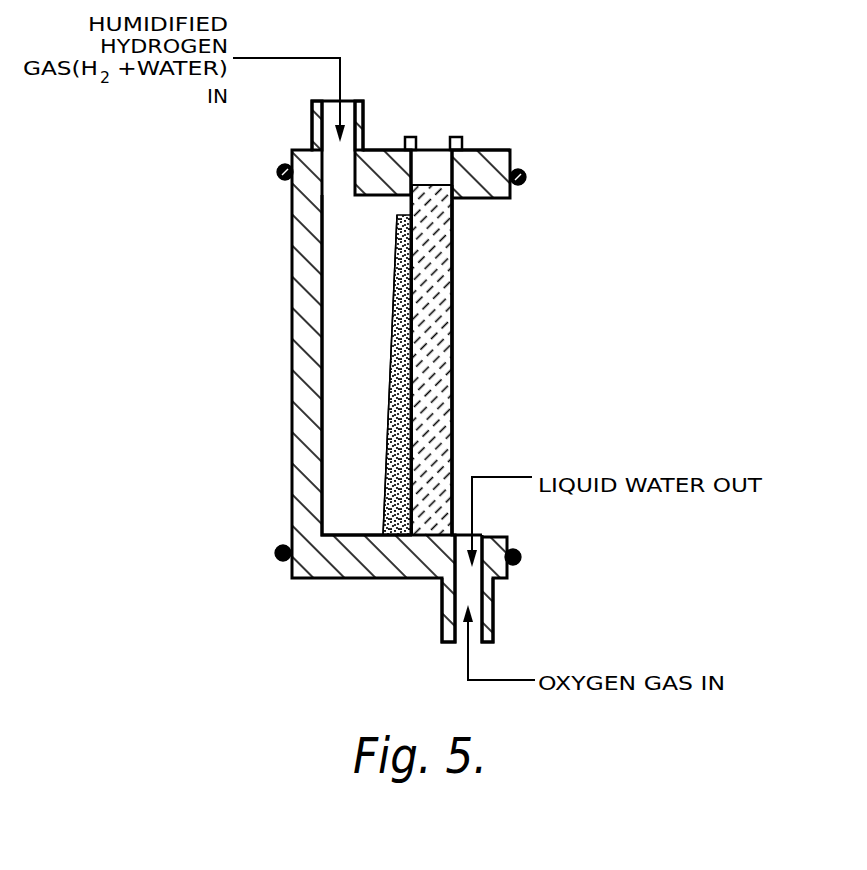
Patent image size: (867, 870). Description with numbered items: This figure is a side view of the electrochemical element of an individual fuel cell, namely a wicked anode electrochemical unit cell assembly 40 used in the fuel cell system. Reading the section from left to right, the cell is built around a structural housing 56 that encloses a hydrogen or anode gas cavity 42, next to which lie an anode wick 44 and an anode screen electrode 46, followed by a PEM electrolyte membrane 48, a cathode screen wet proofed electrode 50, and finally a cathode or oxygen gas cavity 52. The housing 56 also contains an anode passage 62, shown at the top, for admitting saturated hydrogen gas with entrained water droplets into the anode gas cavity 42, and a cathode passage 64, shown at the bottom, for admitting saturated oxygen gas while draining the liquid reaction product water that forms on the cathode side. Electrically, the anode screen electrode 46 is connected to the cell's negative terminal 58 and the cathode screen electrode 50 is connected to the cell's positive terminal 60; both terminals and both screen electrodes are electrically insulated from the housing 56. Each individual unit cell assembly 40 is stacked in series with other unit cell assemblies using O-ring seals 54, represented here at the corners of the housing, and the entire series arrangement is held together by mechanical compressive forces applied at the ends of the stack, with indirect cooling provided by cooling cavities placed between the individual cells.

The wicked anode electrochemical unit cell assembly 40 is at (409, 342).
The hydrogen or anode gas cavity 42 is at (370, 296).
The anode wick 44 is at (399, 414).
The anode screen electrode 46 is at (371, 369).
The PEM electrolyte membrane 48 is at (430, 433).
The cathode screen wet proofed electrode 50 is at (473, 360).
The cathode or oxygen gas cavity 52 is at (507, 364).
The O-ring seals 54 is at (278, 172).
The structural housing 56 is at (292, 362).
The negative terminal 58 is at (404, 140).
The positive terminal 60 is at (464, 143).
The anode passage 62 is at (352, 106).
The cathode passage 64 is at (468, 595).